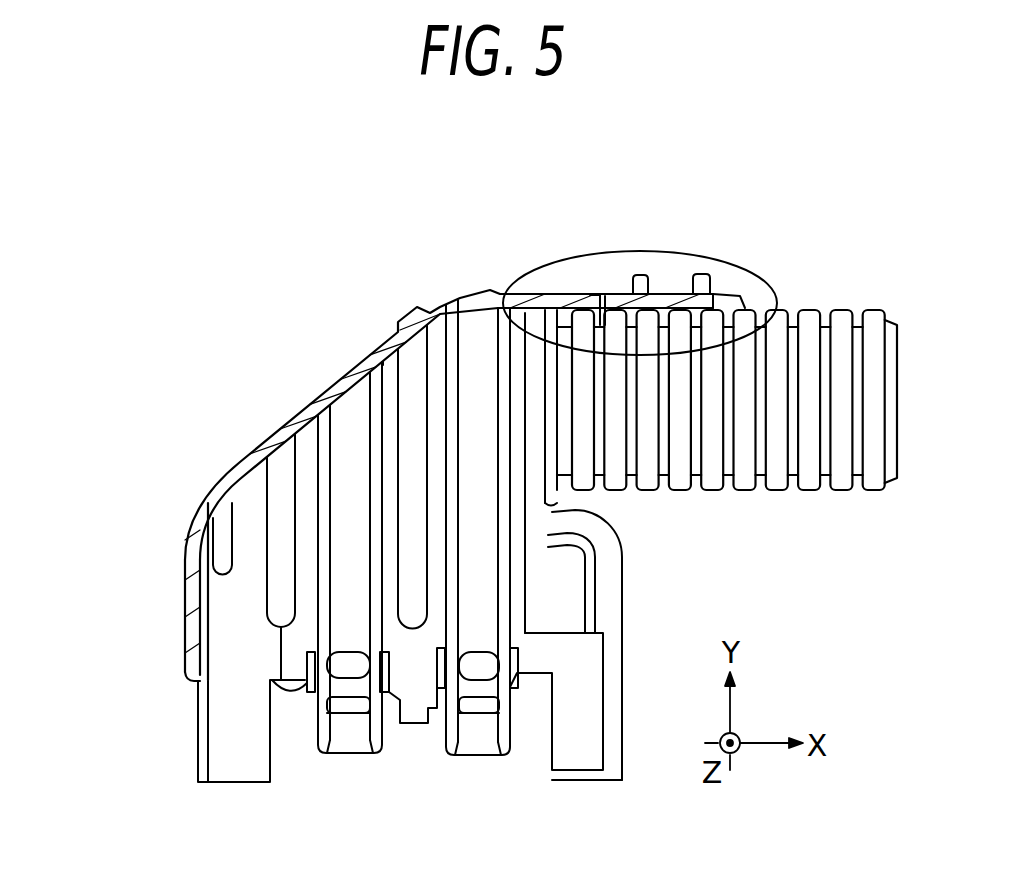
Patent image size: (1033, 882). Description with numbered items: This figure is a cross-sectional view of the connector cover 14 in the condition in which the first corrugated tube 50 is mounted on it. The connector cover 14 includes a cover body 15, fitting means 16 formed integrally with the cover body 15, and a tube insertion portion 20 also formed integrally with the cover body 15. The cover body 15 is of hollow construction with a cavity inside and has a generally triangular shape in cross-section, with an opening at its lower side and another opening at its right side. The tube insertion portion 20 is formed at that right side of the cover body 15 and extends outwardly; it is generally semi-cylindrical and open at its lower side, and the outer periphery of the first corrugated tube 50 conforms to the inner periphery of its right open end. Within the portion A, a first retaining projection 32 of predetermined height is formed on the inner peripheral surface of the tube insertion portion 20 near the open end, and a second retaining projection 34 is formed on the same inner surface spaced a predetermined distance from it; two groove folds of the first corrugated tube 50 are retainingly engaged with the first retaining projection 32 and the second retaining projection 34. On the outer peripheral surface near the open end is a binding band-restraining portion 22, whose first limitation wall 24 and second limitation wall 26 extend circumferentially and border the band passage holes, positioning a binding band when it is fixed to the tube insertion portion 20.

The connector cover 14 is at (226, 470).
The cover body 15 is at (250, 668).
The fitting means 16 is at (570, 763).
The tube insertion portion 20 is at (606, 297).
The binding band-restraining portion 22 is at (680, 290).
The first limitation wall 24 is at (705, 290).
The second limitation wall 26 is at (640, 275).
The first retaining projection 32 is at (735, 330).
The second retaining projection 34 is at (597, 322).
The first corrugated tube 50 is at (885, 495).
The portion A is at (800, 268).